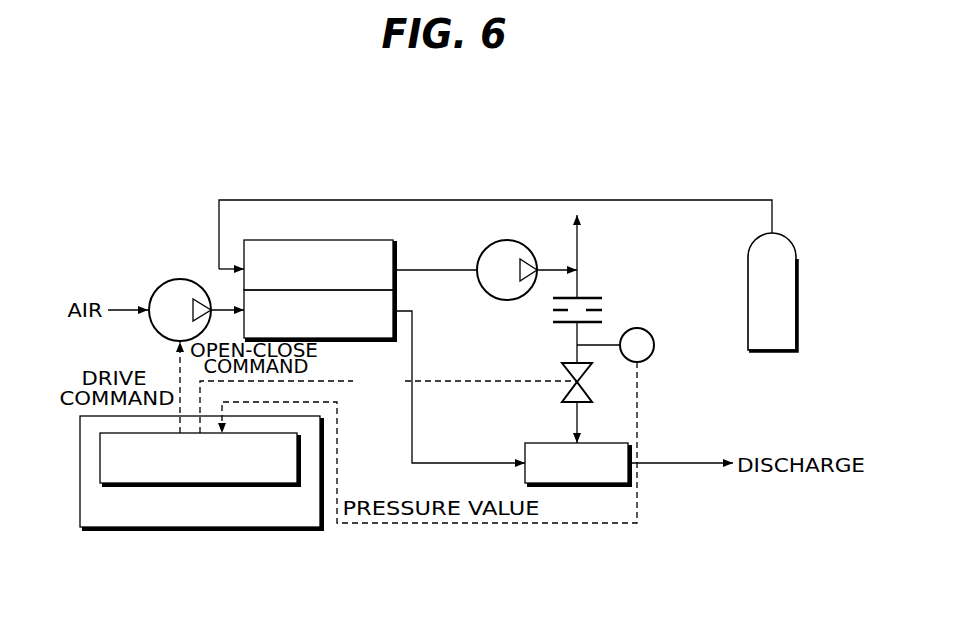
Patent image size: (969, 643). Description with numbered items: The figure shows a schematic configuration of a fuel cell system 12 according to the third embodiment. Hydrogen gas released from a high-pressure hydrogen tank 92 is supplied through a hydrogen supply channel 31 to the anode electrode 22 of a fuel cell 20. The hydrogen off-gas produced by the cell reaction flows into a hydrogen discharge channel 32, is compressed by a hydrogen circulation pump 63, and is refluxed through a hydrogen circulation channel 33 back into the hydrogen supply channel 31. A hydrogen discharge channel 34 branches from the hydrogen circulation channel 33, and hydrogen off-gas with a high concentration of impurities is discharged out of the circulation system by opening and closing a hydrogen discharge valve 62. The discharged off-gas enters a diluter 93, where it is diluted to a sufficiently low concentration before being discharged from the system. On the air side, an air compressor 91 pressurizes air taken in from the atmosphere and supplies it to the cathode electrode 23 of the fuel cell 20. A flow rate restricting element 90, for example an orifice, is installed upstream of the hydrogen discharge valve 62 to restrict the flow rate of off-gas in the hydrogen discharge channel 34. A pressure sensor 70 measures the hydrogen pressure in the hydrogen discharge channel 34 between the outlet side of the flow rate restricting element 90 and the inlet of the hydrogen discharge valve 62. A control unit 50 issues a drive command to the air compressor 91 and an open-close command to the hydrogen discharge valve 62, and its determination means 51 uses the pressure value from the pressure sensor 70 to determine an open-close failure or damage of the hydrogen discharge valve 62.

The fuel cell system 12 is at (447, 162).
The fuel cell 20 is at (297, 231).
The anode electrode 22 is at (378, 240).
The cathode electrode 23 is at (353, 339).
The hydrogen supply channel 31 is at (646, 200).
The hydrogen discharge channel 32 is at (420, 272).
The hydrogen circulation channel 33 is at (578, 245).
The hydrogen discharge channel 34 is at (568, 340).
The control unit 50 is at (80, 512).
The determination means 51 is at (100, 462).
The hydrogen discharge valve 62 is at (583, 372).
The hydrogen circulation pump 63 is at (507, 300).
The pressure sensor 70 is at (657, 340).
The flow rate restricting element 90 is at (603, 310).
The air compressor 91 is at (178, 280).
The high-pressure hydrogen tank 92 is at (797, 278).
The diluter 93 is at (555, 443).